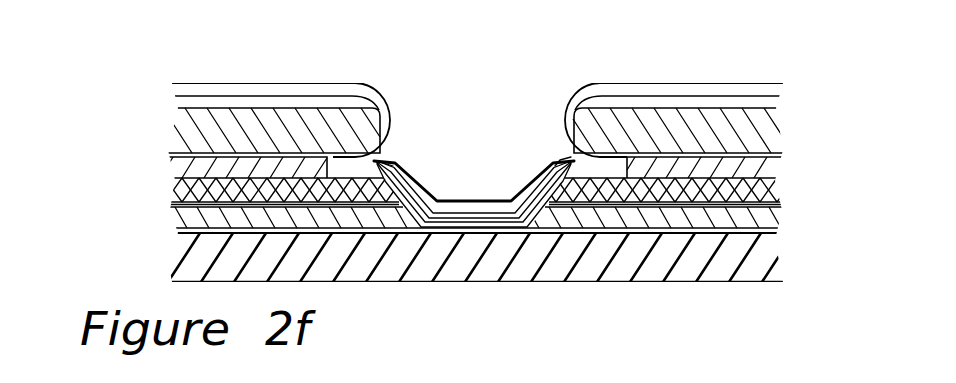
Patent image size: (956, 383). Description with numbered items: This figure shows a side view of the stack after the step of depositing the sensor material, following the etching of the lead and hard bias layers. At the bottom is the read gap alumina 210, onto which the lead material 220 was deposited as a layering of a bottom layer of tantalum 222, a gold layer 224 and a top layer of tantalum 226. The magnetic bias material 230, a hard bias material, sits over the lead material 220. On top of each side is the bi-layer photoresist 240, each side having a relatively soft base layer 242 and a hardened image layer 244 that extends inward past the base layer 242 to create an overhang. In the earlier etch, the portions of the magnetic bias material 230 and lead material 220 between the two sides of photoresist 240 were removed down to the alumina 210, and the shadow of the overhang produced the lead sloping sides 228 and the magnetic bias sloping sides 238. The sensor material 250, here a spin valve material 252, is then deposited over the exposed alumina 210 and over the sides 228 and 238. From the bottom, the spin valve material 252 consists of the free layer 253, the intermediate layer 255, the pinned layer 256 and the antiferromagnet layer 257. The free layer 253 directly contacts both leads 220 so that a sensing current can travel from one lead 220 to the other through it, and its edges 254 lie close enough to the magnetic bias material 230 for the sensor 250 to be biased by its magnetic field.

The alumina 210 is at (183, 263).
The lead material 220 is at (168, 216).
The bottom layer of tantalum 222 is at (751, 234).
The gold layer 224 is at (766, 214).
The top layer of tantalum 226 is at (700, 203).
The lead sloping sides 228 is at (522, 212).
The magnetic bias material 230 is at (168, 189).
The magnetic bias sloping sides 238 is at (592, 230).
The bi-layer photoresist 240 is at (160, 126).
The base layer 242 is at (766, 159).
The image layer 244 is at (754, 130).
The sensor material 250 is at (448, 172).
The spin valve material 252 is at (491, 194).
The free layer 253 is at (500, 228).
The edges 254 is at (431, 175).
The intermediate layer 255 is at (455, 200).
The pinned layer 256 is at (395, 197).
The antiferromagnet (AFM) layer 257 is at (527, 165).